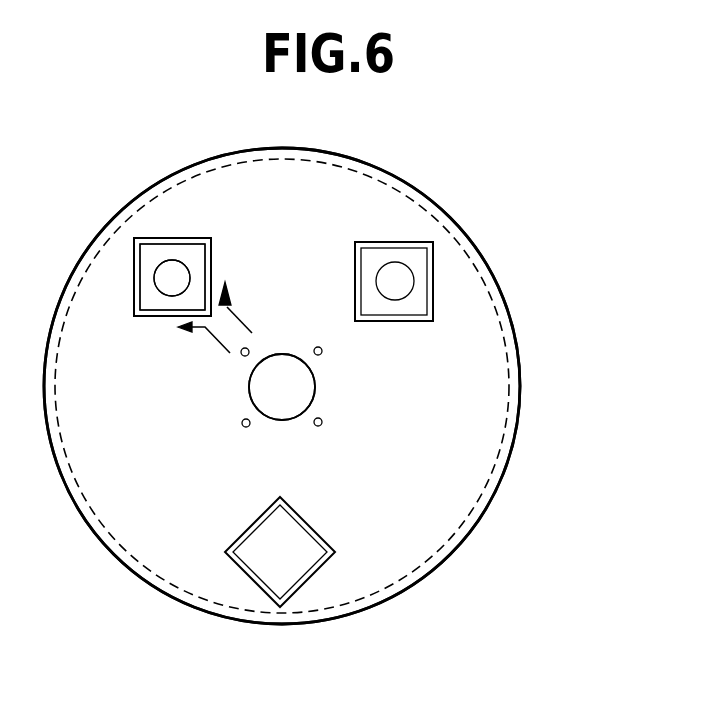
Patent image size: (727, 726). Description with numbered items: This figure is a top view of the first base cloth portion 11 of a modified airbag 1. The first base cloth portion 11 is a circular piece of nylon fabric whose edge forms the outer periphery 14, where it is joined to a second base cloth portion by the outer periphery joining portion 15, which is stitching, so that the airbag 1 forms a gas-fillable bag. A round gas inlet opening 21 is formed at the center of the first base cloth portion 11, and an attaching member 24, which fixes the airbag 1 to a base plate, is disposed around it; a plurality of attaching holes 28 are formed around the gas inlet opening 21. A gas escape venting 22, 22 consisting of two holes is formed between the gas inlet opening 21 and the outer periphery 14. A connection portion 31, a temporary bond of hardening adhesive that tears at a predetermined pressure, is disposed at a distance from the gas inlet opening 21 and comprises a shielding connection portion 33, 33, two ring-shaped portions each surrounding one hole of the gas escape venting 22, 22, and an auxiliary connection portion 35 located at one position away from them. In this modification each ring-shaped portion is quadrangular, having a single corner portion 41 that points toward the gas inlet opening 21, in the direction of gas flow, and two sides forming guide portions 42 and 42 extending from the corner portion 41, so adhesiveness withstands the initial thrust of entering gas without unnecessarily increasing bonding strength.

The airbag 1 is at (518, 133).
The first base cloth portion 11 is at (478, 316).
The outer periphery 14 is at (518, 410).
The outer periphery joining portion 15 is at (515, 358).
The gas inlet opening 21 is at (300, 380).
The gas escape venting 22 is at (175, 264).
The attaching member 24 is at (285, 420).
The attaching holes 28 is at (322, 422).
The connection portion 31 is at (119, 278).
The shielding connection portion 33 is at (133, 250).
The auxiliary connection portion 35 is at (313, 577).
The corner portion 41 is at (212, 312).
The guide portions 42 is at (211, 241).